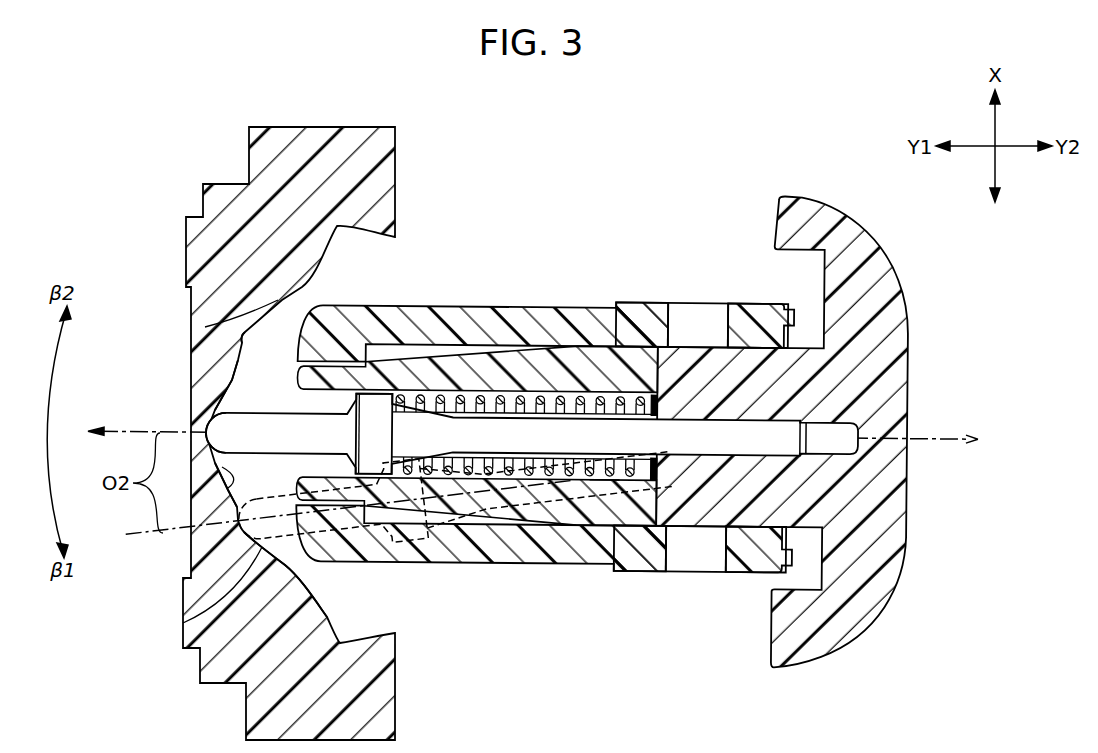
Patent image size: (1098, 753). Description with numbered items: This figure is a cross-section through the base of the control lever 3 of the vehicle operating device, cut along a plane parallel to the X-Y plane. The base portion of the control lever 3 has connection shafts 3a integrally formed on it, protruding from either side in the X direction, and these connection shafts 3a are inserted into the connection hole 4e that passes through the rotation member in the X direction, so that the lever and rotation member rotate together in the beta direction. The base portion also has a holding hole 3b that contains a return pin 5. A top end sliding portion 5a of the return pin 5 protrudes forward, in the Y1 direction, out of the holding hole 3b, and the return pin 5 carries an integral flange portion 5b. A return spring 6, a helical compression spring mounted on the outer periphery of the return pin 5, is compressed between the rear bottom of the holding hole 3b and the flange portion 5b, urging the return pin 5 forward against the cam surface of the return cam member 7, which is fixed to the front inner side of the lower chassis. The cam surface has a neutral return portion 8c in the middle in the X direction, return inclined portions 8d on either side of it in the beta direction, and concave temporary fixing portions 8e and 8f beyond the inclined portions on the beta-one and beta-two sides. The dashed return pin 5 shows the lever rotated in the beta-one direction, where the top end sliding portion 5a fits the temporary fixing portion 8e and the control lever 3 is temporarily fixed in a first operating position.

The control lever 3 is at (876, 240).
The connection shaft 3a is at (696, 319).
The holding hole 3b is at (600, 478).
The connection hole 4e is at (676, 315).
The return pin 5 is at (548, 430).
The top end sliding portion 5a is at (224, 425).
The flange portion 5b is at (372, 405).
The return spring 6 is at (503, 393).
The return cam member 7 is at (186, 242).
The neutral return portion 8c is at (207, 430).
The return inclined portion 8d is at (240, 362).
The temporary fixing portion 8e is at (183, 623).
The temporary fixing portion 8f is at (242, 338).